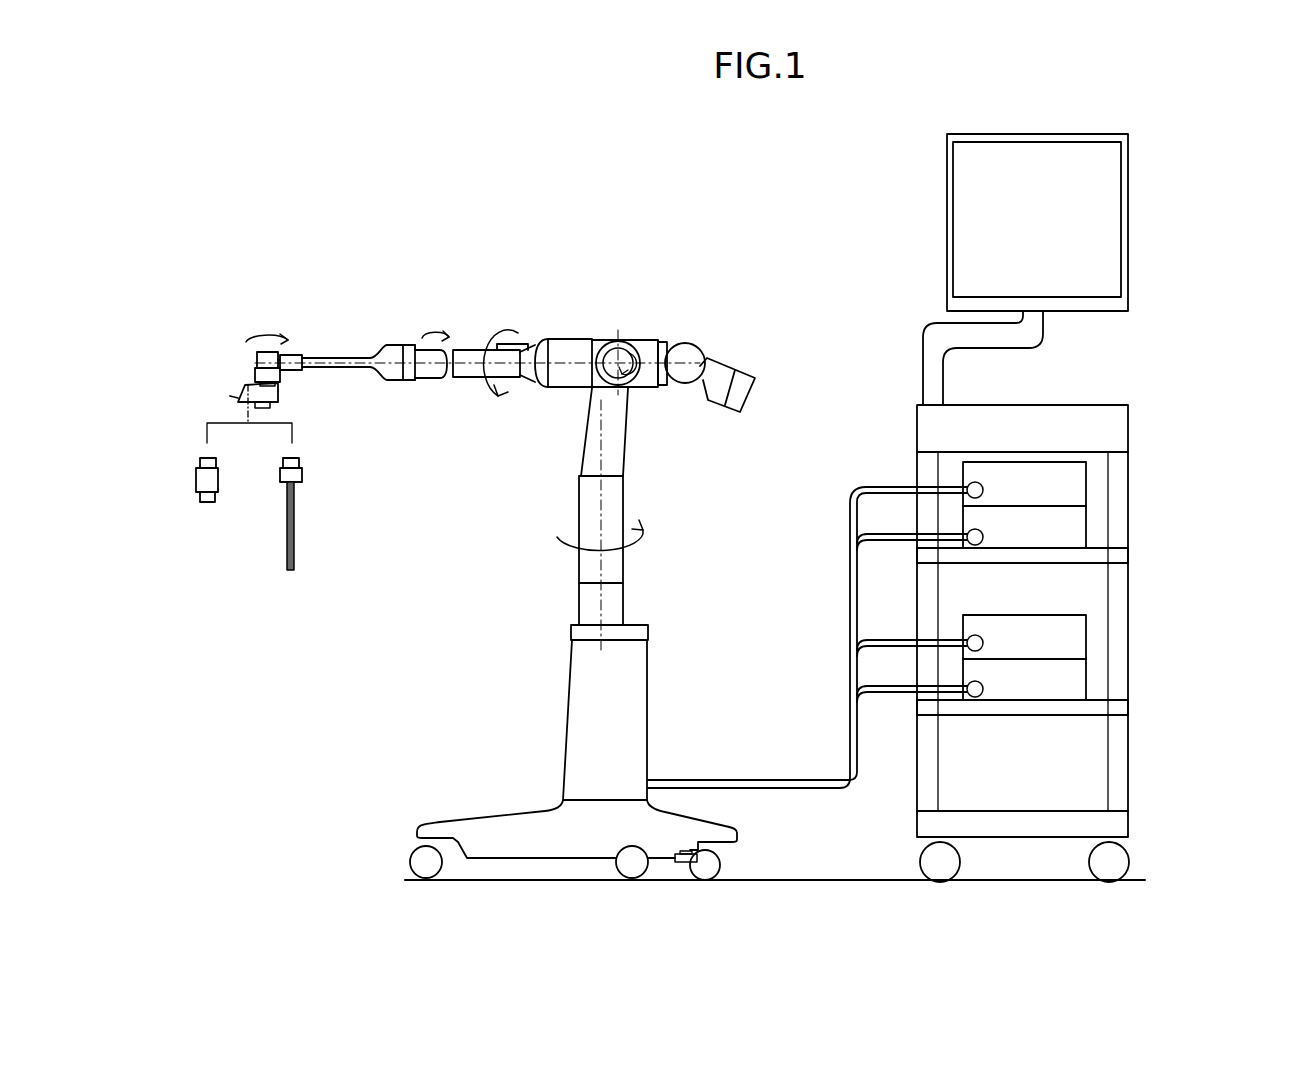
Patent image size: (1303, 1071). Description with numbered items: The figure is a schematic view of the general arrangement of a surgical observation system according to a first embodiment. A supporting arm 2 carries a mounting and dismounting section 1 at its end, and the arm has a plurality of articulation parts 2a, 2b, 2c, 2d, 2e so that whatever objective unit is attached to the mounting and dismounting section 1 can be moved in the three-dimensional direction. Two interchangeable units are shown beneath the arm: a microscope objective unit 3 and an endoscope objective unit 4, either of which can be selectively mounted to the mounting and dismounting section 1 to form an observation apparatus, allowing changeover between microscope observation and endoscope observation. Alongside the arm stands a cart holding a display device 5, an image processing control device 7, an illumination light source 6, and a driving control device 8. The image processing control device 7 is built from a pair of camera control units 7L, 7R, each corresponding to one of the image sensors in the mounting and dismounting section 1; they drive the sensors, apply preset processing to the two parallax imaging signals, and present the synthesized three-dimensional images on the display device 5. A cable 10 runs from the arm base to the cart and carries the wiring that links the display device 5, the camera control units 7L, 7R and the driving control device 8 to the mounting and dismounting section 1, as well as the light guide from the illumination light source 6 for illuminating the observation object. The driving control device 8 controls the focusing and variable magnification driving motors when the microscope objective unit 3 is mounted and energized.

The mounting and dismounting section 1 is at (248, 390).
The supporting arm 2 is at (470, 330).
The articulation part 2a is at (620, 502).
The articulation part 2b is at (627, 343).
The articulation part 2c is at (483, 347).
The articulation part 2d is at (445, 384).
The articulation part 2e is at (283, 372).
The microscope objective unit 3 is at (217, 496).
The endoscope objective unit 4 is at (295, 506).
The display device 5 is at (1108, 215).
The illumination light source 6 is at (1078, 640).
The image processing control device 7 is at (1100, 501).
The camera control unit 7R is at (1078, 486).
The camera control unit 7L is at (1078, 537).
The driving control device 8 is at (1078, 688).
The cable 10 is at (852, 583).